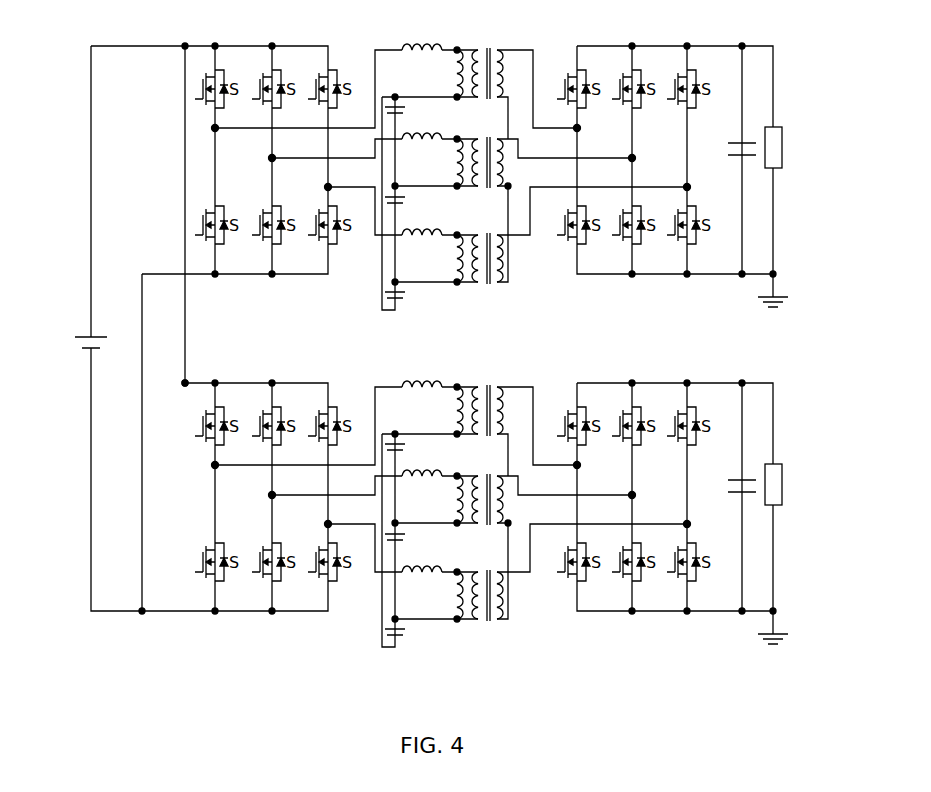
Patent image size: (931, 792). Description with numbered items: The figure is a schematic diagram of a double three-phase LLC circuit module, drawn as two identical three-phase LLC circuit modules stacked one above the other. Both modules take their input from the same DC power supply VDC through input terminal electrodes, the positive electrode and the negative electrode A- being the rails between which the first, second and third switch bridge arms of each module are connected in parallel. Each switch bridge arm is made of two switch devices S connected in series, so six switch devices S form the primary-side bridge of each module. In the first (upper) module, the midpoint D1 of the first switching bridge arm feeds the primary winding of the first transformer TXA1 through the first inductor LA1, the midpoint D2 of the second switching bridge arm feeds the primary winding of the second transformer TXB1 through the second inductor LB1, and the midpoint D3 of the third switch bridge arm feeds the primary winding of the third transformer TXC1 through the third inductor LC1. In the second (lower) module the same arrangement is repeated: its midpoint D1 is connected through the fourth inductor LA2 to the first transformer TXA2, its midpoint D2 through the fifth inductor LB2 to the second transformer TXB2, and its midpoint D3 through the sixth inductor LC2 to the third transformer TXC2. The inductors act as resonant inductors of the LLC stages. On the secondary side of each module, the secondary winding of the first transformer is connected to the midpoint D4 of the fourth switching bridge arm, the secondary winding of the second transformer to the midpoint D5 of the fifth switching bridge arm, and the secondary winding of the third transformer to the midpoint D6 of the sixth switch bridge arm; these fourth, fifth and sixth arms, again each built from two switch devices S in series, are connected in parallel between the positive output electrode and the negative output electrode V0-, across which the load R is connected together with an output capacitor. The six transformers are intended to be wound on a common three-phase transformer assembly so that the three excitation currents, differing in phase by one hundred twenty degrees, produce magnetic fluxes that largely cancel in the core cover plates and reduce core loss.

The switch device S is at (465, 343).
The load R is at (787, 316).
The DC power supply VDC is at (79, 328).
The negative electrode of the input terminals A- is at (59, 605).
The negative electrode of the output terminals V0- is at (804, 452).
The midpoint of the first switching bridge arm D1 is at (207, 297).
The midpoint of the second switching bridge arm D2 is at (261, 327).
The midpoint of the third switching bridge arm D3 is at (317, 356).
The midpoint of the fourth switching bridge arm D4 is at (588, 297).
The midpoint of the fifth switching bridge arm D5 is at (644, 327).
The midpoint of the sixth switching bridge arm D6 is at (699, 357).
The first inductor LA1 is at (422, 36).
The second inductor LB1 is at (422, 127).
The third inductor LC1 is at (422, 223).
The fourth inductor LA2 is at (422, 373).
The fifth inductor LB2 is at (422, 464).
The sixth inductor LC2 is at (422, 560).
The first transformer TXA1 is at (472, 61).
The second transformer TXB1 is at (472, 152).
The third transformer TXC1 is at (472, 248).
The first transformer TXA2 is at (472, 398).
The second transformer TXB2 is at (472, 489).
The third transformer TXC2 is at (472, 585).